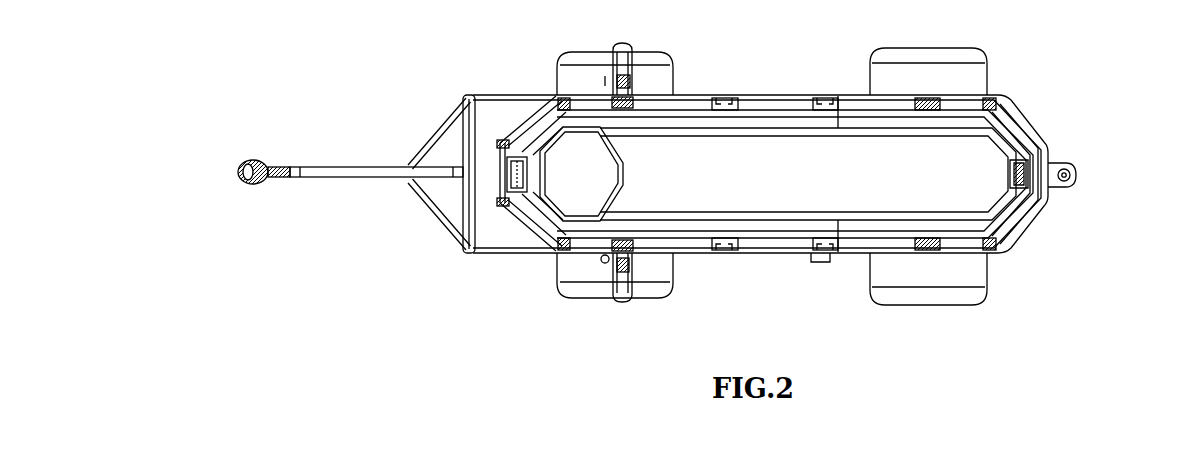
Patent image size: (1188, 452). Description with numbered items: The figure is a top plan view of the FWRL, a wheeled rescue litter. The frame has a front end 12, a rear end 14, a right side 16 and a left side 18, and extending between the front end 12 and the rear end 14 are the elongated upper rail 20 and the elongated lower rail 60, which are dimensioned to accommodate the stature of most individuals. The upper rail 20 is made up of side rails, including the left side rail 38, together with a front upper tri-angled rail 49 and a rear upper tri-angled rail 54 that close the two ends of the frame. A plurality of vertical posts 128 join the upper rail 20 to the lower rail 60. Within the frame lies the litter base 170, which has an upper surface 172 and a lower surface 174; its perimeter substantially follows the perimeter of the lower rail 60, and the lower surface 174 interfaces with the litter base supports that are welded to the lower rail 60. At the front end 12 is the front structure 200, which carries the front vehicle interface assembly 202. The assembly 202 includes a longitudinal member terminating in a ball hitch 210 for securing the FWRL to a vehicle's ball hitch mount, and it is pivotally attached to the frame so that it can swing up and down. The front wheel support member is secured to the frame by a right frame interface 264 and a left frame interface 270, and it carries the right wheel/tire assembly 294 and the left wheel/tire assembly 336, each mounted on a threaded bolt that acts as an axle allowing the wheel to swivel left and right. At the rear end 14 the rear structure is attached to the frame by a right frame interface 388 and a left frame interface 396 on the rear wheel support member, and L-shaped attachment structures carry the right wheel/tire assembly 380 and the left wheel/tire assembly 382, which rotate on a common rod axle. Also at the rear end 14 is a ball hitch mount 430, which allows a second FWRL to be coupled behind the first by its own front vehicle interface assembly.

The front end 12 is at (507, 203).
The rear end 14 is at (1053, 143).
The right side 16 is at (690, 95).
The left side 18 is at (810, 257).
The elongated upper rail 20 is at (752, 93).
The left side rail 38 is at (683, 93).
The front upper tri-angled rail 49 is at (500, 123).
The rear upper tri-angled rail 54 is at (1023, 120).
The elongated lower rail 60 is at (647, 133).
The vertical posts 128 is at (843, 95).
The litter base 170 is at (758, 148).
The upper surface 172 is at (804, 174).
The lower surface 174 is at (728, 200).
The front structure 200 is at (380, 103).
The front vehicle interface assembly 202 is at (439, 174).
The ball hitch 210 is at (232, 172).
The right frame interface 264 is at (615, 92).
The left frame interface 270 is at (585, 248).
The right wheel/tire assembly 294 is at (617, 47).
The left wheel/tire assembly 336 is at (608, 297).
The right wheel/tire assembly 380 is at (940, 68).
The left wheel/tire assembly 382 is at (968, 295).
The right frame interface 388 is at (993, 100).
The left frame interface 396 is at (995, 262).
The ball hitch mount 430 is at (1080, 177).